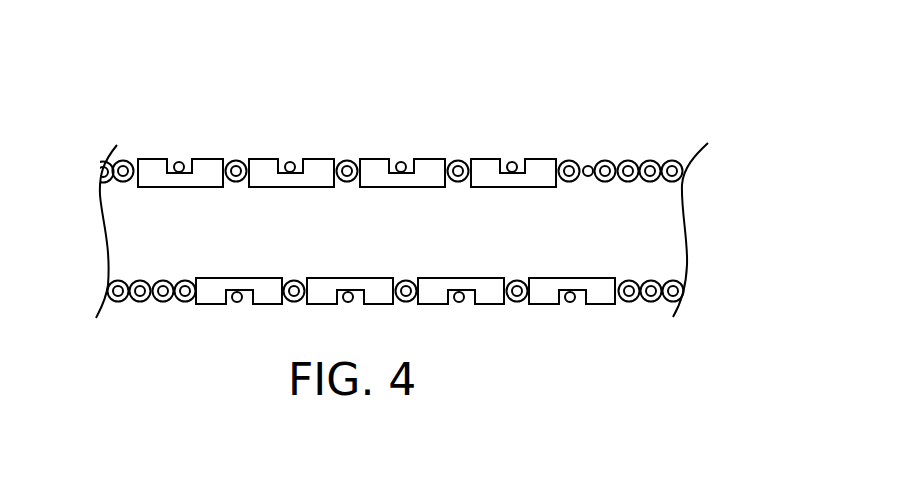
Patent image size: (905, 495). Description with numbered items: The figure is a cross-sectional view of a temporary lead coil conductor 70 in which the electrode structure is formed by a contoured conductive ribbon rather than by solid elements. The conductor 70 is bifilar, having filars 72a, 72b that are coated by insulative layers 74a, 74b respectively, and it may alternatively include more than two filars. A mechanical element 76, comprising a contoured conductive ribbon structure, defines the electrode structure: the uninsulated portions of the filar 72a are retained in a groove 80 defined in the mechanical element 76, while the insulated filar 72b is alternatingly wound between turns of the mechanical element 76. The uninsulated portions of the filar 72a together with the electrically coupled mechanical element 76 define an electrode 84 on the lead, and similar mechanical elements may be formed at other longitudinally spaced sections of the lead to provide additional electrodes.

The temporary lead coil conductor 70 is at (407, 162).
The filar 72a is at (614, 171).
The filar 72b is at (542, 163).
The insulative layer 74a is at (628, 196).
The insulative layer 74b is at (608, 196).
The mechanical element 76 is at (317, 158).
The groove 80 is at (398, 140).
The electrode 84 is at (407, 149).